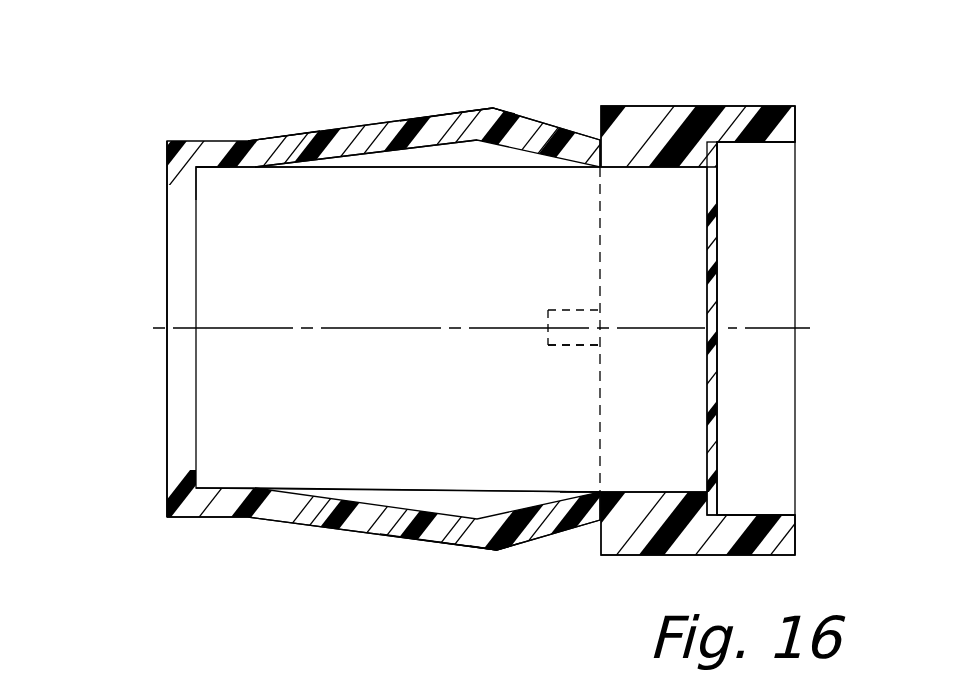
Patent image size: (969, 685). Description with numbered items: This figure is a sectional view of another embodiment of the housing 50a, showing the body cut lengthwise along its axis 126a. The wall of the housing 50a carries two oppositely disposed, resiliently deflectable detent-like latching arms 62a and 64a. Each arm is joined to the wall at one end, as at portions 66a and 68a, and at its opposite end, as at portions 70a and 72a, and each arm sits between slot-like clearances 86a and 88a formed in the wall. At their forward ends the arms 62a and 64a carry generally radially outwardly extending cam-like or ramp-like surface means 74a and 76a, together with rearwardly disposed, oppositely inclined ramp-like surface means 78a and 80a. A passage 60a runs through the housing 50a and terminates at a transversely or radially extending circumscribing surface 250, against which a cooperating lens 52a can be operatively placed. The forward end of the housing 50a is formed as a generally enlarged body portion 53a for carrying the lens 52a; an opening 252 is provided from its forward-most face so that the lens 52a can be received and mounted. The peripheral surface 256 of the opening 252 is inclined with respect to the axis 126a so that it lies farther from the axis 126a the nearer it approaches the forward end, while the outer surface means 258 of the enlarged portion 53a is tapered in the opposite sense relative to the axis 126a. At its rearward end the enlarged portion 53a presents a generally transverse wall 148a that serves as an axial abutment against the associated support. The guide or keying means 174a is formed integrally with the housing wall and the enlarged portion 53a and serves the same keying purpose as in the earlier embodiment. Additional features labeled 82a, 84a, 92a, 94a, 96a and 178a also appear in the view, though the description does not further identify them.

The housing 50a is at (218, 133).
The enlarged body portion 53a is at (786, 103).
The outer surface means 258 is at (704, 99).
The opening 252 is at (735, 504).
The lens 52a is at (703, 262).
The circumscribing surface 250 is at (724, 150).
The axis 126a is at (778, 338).
The peripheral surface 256 is at (778, 142).
The transverse wall 148a is at (598, 192).
The guide or keying means 174a is at (540, 304).
The recess wall 178a is at (560, 340).
The joining portion 68a is at (258, 141).
The passage 60a is at (347, 176).
The rearward ramp-like surface means 80a is at (440, 112).
The latching arm 64a is at (449, 101).
The apex 84a is at (491, 106).
The forward ramp-like surface means 76a is at (555, 126).
The joining portion 72a is at (592, 156).
The slot-like clearance 88a is at (430, 158).
The slot-like clearance 86a is at (400, 498).
The left outer face 94a is at (167, 181).
The left wall 92a is at (160, 300).
The inner corner 96a is at (200, 172).
The joining portion 66a is at (237, 507).
The rearward ramp-like surface means 78a is at (367, 530).
The latching arm 62a is at (450, 557).
The lower apex 82a is at (493, 552).
The forward ramp-like surface means 74a is at (550, 540).
The joining portion 70a is at (598, 512).